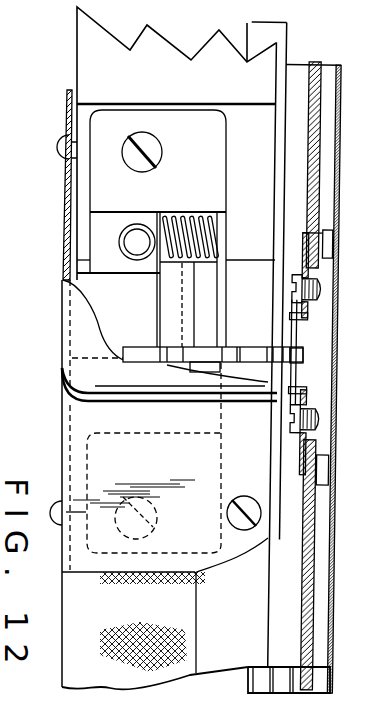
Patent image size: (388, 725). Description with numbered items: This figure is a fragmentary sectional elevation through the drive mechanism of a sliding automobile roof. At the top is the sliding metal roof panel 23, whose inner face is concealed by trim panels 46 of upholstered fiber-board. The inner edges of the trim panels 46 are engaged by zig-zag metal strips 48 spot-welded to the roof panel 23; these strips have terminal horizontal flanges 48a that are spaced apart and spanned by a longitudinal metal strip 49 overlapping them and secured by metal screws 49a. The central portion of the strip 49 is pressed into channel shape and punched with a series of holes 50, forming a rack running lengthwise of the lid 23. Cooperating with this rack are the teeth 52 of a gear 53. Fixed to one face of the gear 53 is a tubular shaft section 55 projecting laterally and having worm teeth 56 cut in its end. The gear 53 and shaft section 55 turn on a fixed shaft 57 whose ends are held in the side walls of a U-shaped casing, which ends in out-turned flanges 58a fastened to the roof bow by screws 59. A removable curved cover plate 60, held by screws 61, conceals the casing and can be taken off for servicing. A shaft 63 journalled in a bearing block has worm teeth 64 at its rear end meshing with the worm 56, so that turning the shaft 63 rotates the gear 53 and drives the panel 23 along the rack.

The sliding metal roof panel 23 is at (327, 537).
The trim panel 46 is at (322, 157).
The metal strip 48 is at (318, 246).
The terminal horizontal flange 48a is at (306, 322).
The longitudinal metal strip 49 is at (294, 321).
The metal screw 49a is at (280, 432).
The hole 50 is at (296, 370).
The gear tooth 52 is at (334, 372).
The gear 53 is at (143, 358).
The tubular shaft section 55 is at (158, 293).
The worm teeth 56 is at (216, 262).
The fixed shaft 57 is at (190, 367).
The out-turned flange 58a is at (70, 183).
The screw 59 is at (157, 137).
The removable metal cover plate 60 is at (228, 565).
The screw 61 is at (245, 530).
The shaft 63 is at (128, 266).
The worm teeth 64 is at (128, 212).